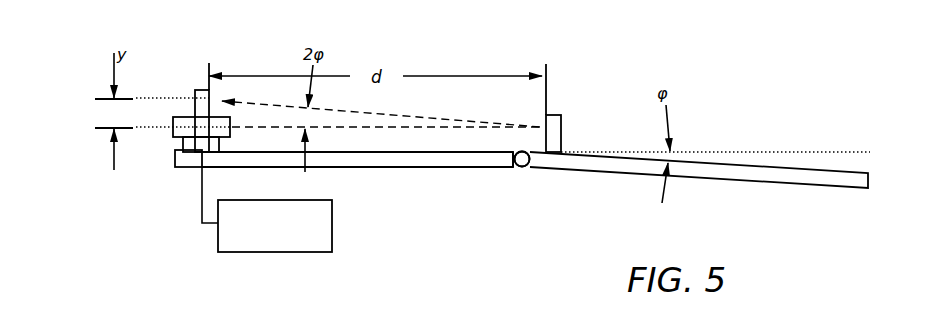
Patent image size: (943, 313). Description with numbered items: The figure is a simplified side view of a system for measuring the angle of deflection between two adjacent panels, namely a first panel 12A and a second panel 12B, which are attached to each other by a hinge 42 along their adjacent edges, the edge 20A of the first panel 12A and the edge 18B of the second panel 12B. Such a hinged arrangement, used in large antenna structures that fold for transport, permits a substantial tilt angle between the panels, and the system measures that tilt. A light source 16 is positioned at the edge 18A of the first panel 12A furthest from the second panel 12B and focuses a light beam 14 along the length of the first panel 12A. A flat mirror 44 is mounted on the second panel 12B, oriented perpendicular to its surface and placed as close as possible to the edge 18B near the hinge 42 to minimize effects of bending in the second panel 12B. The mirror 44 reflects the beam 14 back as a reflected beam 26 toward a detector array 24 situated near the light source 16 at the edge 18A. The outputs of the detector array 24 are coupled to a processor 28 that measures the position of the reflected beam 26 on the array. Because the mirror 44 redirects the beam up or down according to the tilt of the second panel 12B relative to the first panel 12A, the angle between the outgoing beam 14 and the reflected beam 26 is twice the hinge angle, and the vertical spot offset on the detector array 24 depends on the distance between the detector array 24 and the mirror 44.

The first panel 12A is at (443, 166).
The second panel 12B is at (705, 177).
The light beam 14 is at (333, 128).
The light source 16 is at (175, 131).
The edge of first panel 18A is at (176, 158).
The edge of second panel 18B is at (531, 164).
The edge of first panel 20A is at (513, 167).
The detector array 24 is at (203, 89).
The reflected beam 26 is at (253, 103).
The processor 28 is at (332, 237).
The hinge 42 is at (524, 167).
The flat mirror 44 is at (560, 113).